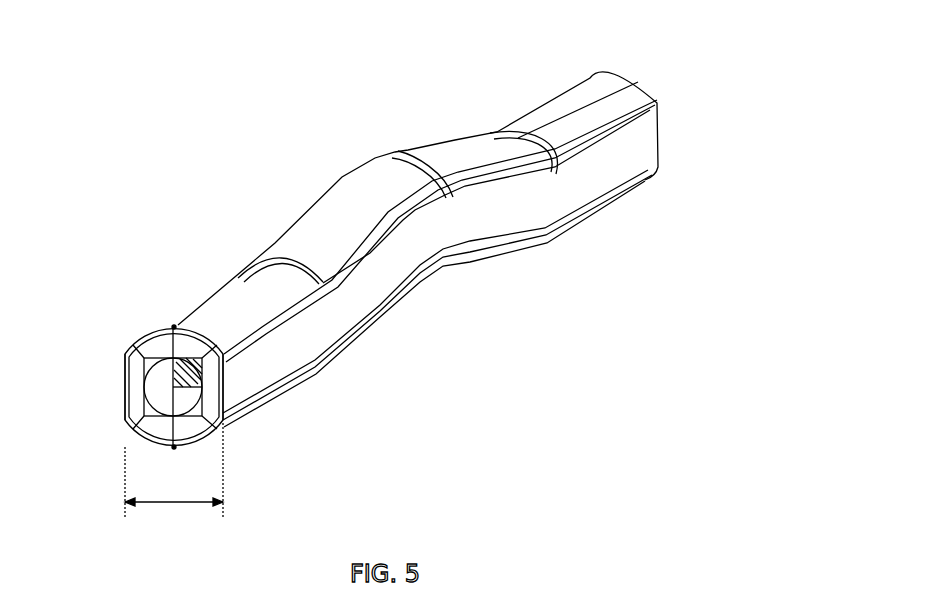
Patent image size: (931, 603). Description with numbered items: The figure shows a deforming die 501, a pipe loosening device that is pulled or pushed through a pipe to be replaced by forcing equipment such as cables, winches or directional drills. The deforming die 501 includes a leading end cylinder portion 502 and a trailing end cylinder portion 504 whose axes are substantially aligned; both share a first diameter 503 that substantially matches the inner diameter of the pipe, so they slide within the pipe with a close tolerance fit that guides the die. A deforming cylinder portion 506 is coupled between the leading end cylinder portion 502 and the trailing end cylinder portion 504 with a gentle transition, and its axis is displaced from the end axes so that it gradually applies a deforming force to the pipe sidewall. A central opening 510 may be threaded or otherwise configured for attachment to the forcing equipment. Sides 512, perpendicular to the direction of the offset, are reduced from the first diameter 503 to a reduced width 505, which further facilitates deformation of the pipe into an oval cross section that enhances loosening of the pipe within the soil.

The deforming die 501 is at (447, 358).
The leading end cylinder portion 502 is at (633, 138).
The first diameter 503 is at (216, 418).
The trailing end cylinder portion 504 is at (258, 353).
The reduced width 505 is at (174, 502).
The deforming cylinder portion 506 is at (438, 203).
The central opening 510 is at (167, 387).
The sides 512 is at (127, 395).